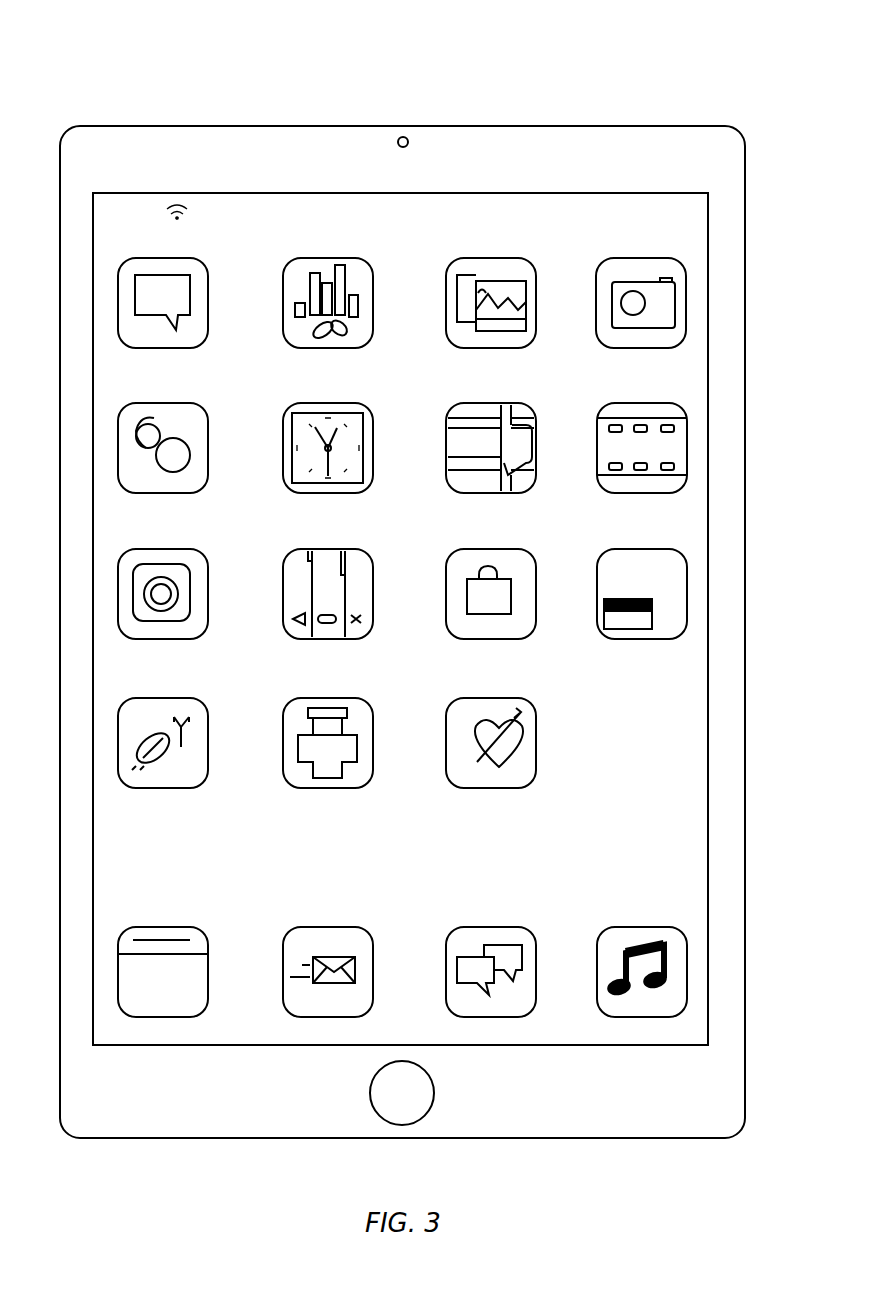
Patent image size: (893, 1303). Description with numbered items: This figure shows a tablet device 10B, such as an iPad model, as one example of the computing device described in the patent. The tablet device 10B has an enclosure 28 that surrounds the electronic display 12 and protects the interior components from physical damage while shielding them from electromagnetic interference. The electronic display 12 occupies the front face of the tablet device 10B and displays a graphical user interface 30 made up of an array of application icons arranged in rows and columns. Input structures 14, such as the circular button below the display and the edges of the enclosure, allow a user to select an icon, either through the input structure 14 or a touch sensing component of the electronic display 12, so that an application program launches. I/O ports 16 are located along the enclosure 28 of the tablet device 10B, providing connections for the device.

The tablet device 10B is at (72, 75).
The electronic display 12 is at (710, 705).
The input structure 14 is at (434, 1093).
The I/O port 16 is at (122, 126).
The enclosure 28 is at (746, 602).
The graphical user interface 30 is at (686, 799).